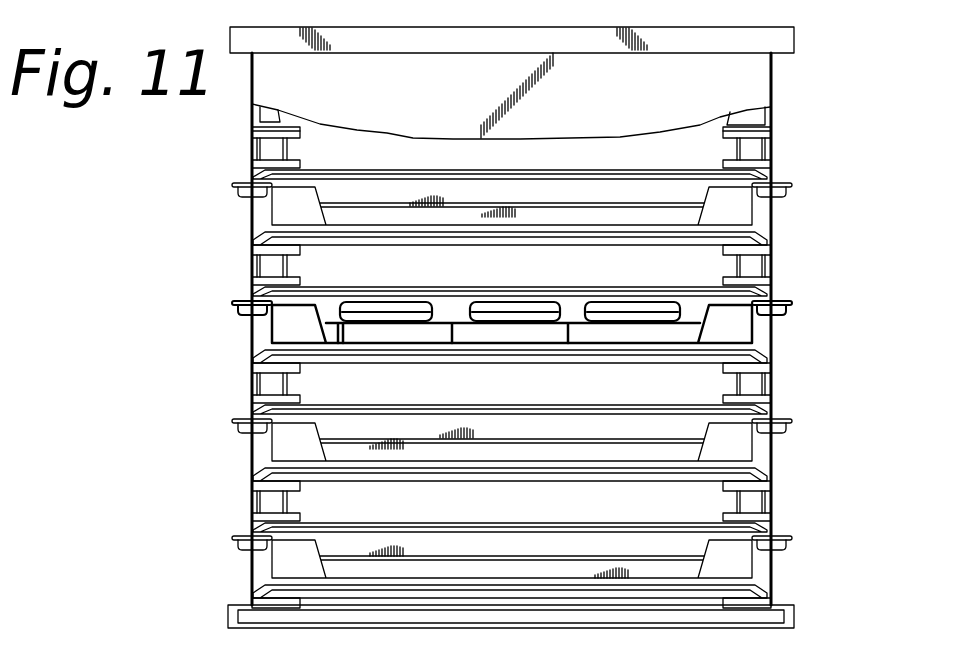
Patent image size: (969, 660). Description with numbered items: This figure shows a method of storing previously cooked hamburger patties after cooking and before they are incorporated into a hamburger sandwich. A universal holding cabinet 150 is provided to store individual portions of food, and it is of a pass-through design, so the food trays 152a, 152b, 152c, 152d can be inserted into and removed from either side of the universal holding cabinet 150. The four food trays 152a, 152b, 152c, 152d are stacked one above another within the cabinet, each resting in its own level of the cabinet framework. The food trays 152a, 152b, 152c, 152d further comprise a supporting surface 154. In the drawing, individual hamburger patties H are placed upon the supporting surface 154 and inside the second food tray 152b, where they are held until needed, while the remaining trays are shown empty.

The universal holding cabinet 150 is at (70, 282).
The food tray 152a is at (776, 206).
The food tray 152b is at (776, 326).
The food tray 152c is at (776, 440).
The food tray 152d is at (776, 557).
The supporting surface 154 is at (325, 328).
The hamburger patties H is at (500, 304).